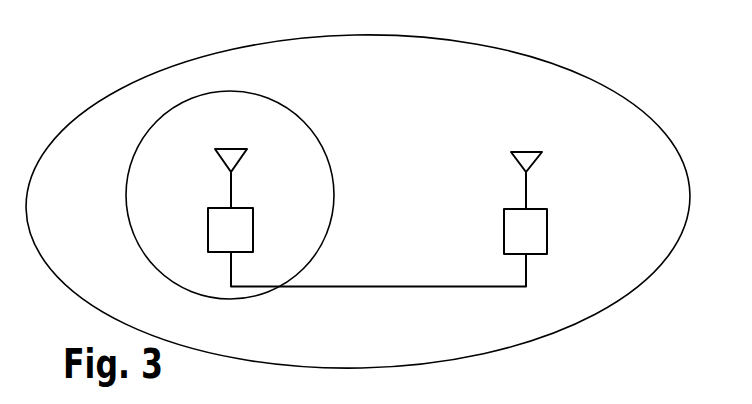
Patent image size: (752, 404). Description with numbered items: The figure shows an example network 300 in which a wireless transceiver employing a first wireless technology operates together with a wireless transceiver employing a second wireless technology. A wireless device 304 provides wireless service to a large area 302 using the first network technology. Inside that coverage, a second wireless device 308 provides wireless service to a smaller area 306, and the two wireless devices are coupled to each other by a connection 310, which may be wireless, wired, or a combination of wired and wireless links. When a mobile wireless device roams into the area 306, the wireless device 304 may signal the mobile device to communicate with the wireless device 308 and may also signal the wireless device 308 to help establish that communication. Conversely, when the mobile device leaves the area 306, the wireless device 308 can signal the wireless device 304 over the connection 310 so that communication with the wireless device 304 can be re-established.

The network 300 is at (88, 69).
The area 302 is at (545, 65).
The wireless device 304 is at (548, 233).
The area 306 is at (127, 203).
The wireless device 308 is at (253, 227).
The connection 310 is at (378, 288).